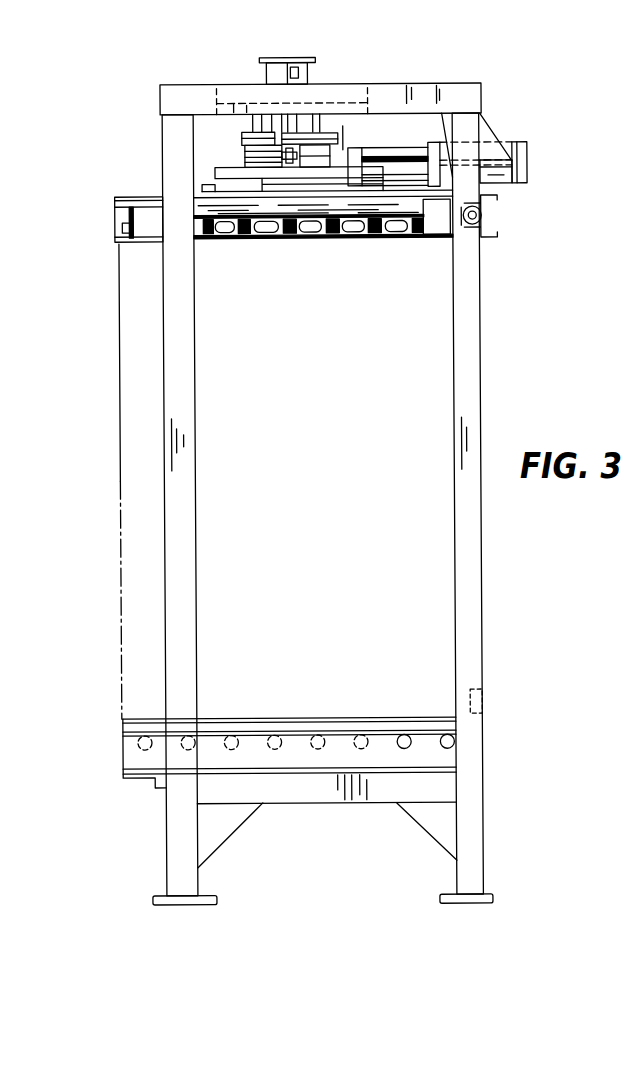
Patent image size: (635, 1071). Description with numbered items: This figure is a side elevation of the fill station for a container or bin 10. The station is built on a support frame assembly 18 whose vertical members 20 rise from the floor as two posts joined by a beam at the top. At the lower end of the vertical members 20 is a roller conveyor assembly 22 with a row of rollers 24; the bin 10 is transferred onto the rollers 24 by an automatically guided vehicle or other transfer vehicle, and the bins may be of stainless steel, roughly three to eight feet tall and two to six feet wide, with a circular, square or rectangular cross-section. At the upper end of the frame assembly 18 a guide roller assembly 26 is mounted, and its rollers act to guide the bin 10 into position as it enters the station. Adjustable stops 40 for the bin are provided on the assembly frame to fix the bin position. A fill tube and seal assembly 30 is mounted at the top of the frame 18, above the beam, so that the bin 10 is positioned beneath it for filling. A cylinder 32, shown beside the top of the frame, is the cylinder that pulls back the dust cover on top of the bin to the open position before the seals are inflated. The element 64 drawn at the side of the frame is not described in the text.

The container or bin 10 is at (128, 349).
The support frame assembly 18 is at (449, 84).
The vertical members 20 is at (184, 314).
The roller conveyor assembly 22 is at (345, 722).
The rollers 24 is at (234, 733).
The right guide roller assembly 26 is at (393, 239).
The fill tube and seal assembly 30 is at (266, 72).
The cylinder 32 is at (516, 143).
The adjustable stops 40 is at (500, 207).
The plate 64 is at (531, 169).